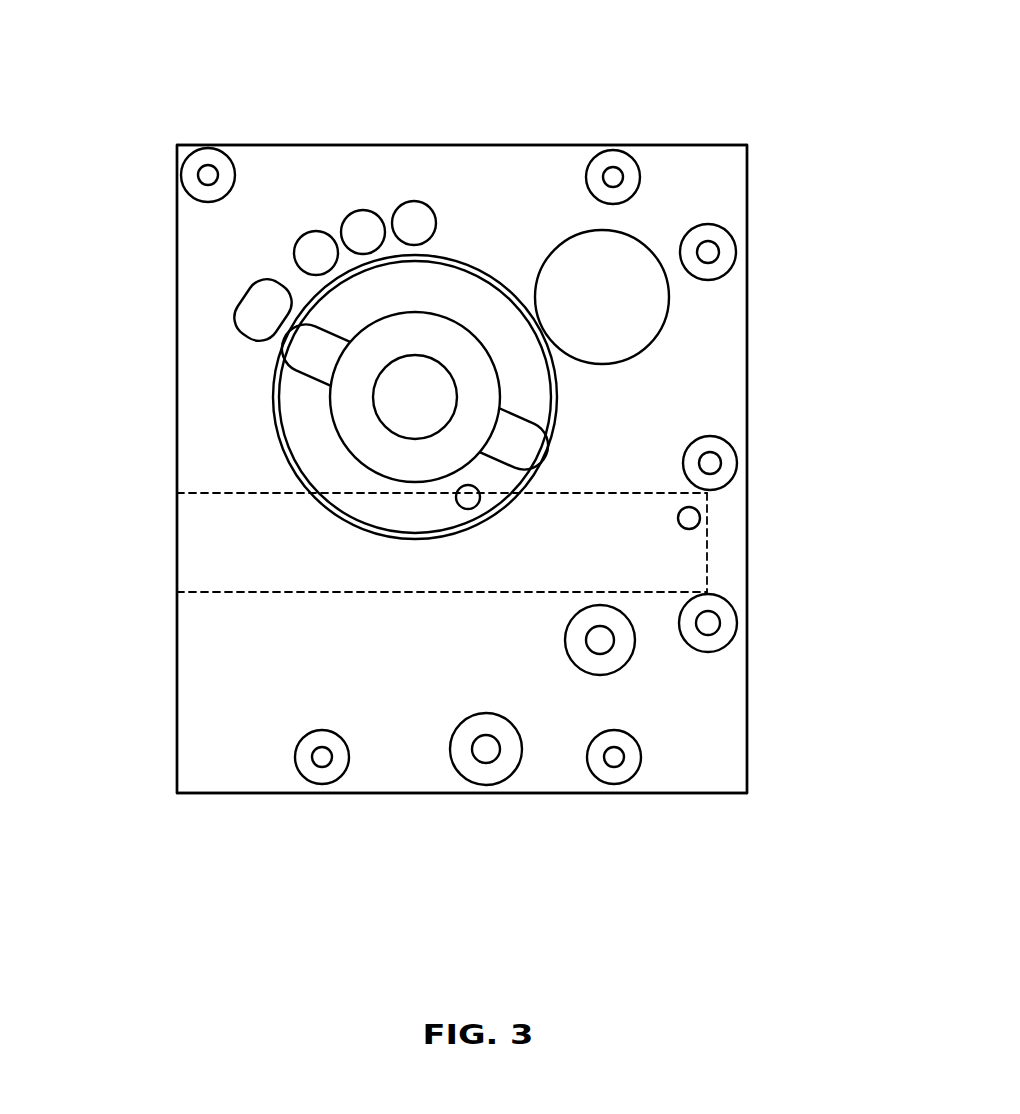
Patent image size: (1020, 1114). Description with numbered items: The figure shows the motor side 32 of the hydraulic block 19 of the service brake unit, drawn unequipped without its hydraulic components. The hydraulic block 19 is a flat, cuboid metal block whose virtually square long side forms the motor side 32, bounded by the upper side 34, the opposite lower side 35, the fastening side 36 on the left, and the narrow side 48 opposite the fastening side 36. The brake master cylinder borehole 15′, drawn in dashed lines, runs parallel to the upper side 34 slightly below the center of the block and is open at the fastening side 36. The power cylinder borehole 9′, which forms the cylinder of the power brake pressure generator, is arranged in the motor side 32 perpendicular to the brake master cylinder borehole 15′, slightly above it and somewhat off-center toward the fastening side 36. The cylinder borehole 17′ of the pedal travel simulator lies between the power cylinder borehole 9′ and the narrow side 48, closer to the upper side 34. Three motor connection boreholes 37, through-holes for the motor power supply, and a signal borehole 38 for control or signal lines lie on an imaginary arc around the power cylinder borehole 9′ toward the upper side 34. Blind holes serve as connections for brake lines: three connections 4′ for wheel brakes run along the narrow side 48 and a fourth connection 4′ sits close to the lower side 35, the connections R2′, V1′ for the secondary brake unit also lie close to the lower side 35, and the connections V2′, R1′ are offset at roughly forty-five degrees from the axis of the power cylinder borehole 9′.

The hydraulic block 19 is at (257, 106).
The motor side 32 is at (513, 216).
The upper side 34 is at (453, 145).
The lower side 35 is at (231, 793).
The fastening side 36 is at (177, 657).
The narrow side 48 is at (748, 364).
The motor connection boreholes 37 is at (316, 245).
The signal borehole 38 is at (255, 312).
The power cylinder borehole 9′ is at (355, 410).
The cylinder borehole 17′ is at (655, 302).
The brake master cylinder borehole 15′ is at (212, 542).
The connections 4′ is at (722, 247).
The connection R1′ is at (614, 160).
The connection R2′ is at (322, 775).
The connection V1′ is at (486, 775).
The connection V2′ is at (618, 657).